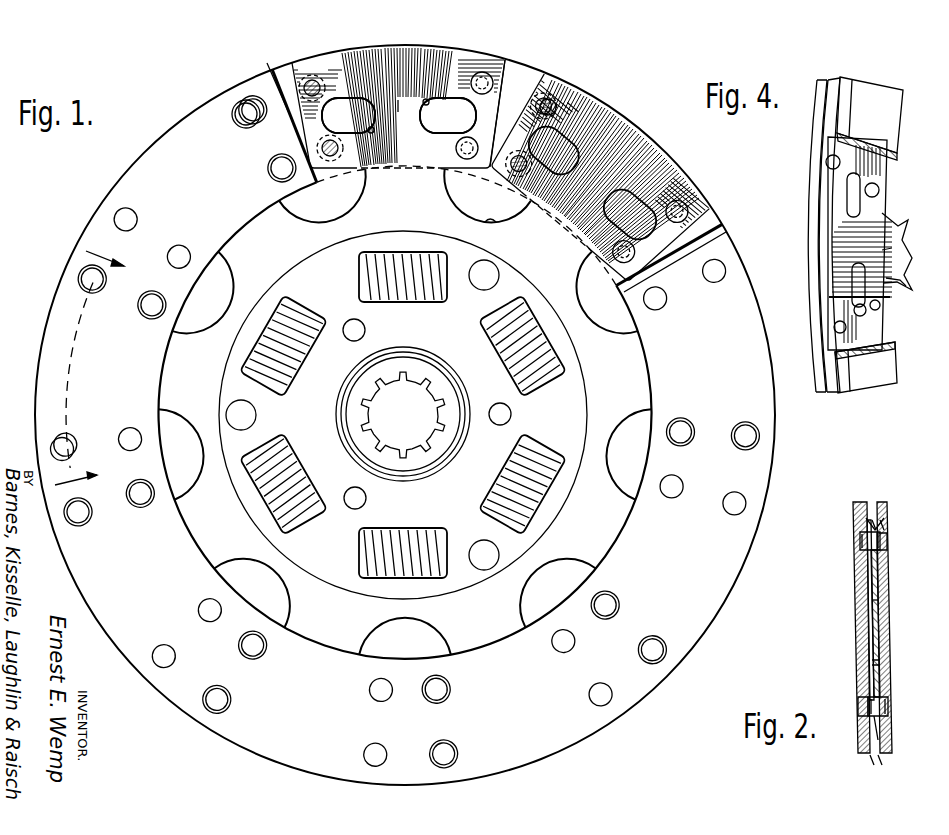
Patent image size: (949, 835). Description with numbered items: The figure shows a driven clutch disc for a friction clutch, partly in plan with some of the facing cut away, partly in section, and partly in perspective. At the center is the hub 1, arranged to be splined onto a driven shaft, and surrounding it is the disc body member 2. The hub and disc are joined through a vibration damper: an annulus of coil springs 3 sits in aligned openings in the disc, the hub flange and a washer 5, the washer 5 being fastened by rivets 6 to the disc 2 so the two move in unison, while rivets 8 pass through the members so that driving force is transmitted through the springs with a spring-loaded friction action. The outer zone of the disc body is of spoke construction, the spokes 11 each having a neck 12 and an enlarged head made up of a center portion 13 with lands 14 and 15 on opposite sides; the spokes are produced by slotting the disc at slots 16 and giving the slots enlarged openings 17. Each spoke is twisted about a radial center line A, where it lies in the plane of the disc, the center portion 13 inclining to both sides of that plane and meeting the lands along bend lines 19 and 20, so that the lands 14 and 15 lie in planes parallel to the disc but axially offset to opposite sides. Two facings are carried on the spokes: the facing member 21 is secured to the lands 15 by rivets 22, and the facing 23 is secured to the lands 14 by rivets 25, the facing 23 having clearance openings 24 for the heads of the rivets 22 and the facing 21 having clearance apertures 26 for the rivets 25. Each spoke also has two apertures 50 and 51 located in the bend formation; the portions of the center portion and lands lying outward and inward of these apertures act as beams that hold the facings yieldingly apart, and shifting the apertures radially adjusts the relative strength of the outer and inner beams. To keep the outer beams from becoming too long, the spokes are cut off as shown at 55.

In FIG. 1, the hub 1 is at (419, 370).
In FIG. 1, the disc body member 2 is at (598, 303).
In FIG. 4, the disc body member 2 is at (906, 230).
In FIG. 1, the coil springs 3 is at (438, 298).
In FIG. 1, the washer 5 is at (582, 390).
In FIG. 1, the rivets 6 is at (226, 412).
In FIG. 1, the rivets 8 is at (512, 414).
In FIG. 1, the spokes 11 is at (419, 50).
In FIG. 4, the spokes 11 is at (838, 260).
In FIG. 2, the spokes 11 is at (880, 600).
In FIG. 1, the neck 12 is at (432, 187).
In FIG. 4, the neck 12 is at (891, 215).
In FIG. 1, the center portion 13 is at (378, 52).
In FIG. 4, the center portion 13 is at (828, 240).
In FIG. 1, the land 14 is at (281, 66).
In FIG. 4, the land 14 is at (828, 353).
In FIG. 2, the land 14 is at (882, 728).
In FIG. 1, the land 15 is at (506, 63).
In FIG. 4, the land 15 is at (826, 143).
In FIG. 2, the land 15 is at (865, 528).
In FIG. 1, the slots 16 is at (502, 108).
In FIG. 1, the enlarged portions or openings 17 is at (492, 226).
In FIG. 4, the enlarged portions or openings 17 is at (913, 218).
In FIG. 1, the bend line 19 is at (341, 52).
In FIG. 4, the bend line 19 is at (830, 300).
In FIG. 2, the bend line 19 is at (880, 680).
In FIG. 1, the bend line 20 is at (463, 55).
In FIG. 4, the bend line 20 is at (828, 190).
In FIG. 2, the bend line 20 is at (866, 578).
In FIG. 1, the facing member 21 is at (497, 195).
In FIG. 4, the facing member 21 is at (823, 78).
In FIG. 2, the facing member 21 is at (856, 622).
In FIG. 1, the rivets 22 is at (92, 296).
In FIG. 4, the rivets 22 is at (826, 162).
In FIG. 2, the rivets 22 is at (860, 542).
In FIG. 1, the facing 23 is at (648, 318).
In FIG. 4, the facing 23 is at (876, 88).
In FIG. 2, the facing 23 is at (885, 572).
In FIG. 1, the clearance openings 24 is at (148, 318).
In FIG. 2, the clearance openings 24 is at (887, 540).
In FIG. 1, the rivets 25 is at (72, 448).
In FIG. 4, the rivets 25 is at (834, 330).
In FIG. 2, the rivets 25 is at (890, 708).
In FIG. 1, the clearance apertures 26 is at (586, 83).
In FIG. 2, the clearance apertures 26 is at (858, 704).
In FIG. 1, the aperture 50 is at (372, 135).
In FIG. 4, the aperture 50 is at (853, 336).
In FIG. 1, the aperture 51 is at (428, 100).
In FIG. 4, the aperture 51 is at (864, 240).
In FIG. 1, the cut-off 55 is at (280, 87).
In FIG. 4, the cut-off 55 is at (851, 142).
In FIG. 2, the cut-off 55 is at (873, 516).
In FIG. 1, the center line A is at (402, 112).
In FIG. 2, the center line A is at (879, 628).